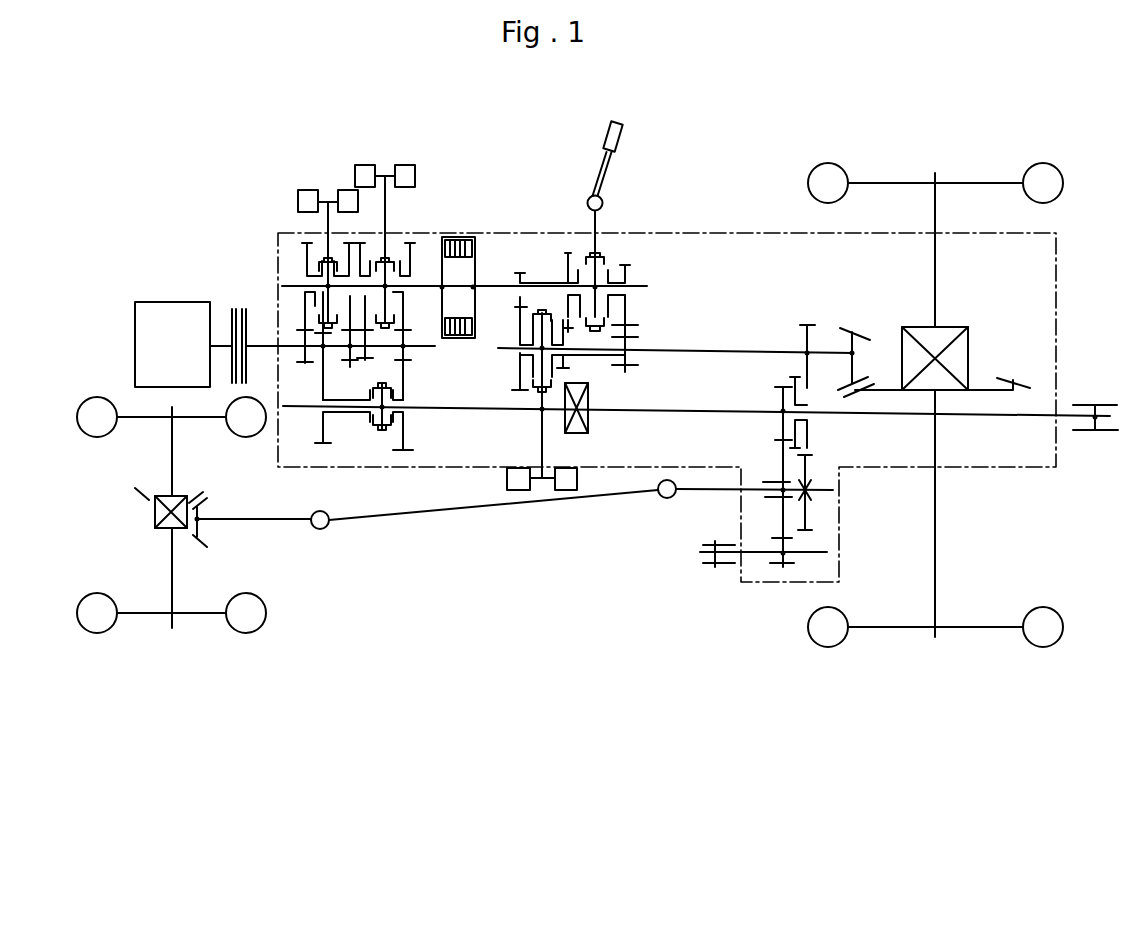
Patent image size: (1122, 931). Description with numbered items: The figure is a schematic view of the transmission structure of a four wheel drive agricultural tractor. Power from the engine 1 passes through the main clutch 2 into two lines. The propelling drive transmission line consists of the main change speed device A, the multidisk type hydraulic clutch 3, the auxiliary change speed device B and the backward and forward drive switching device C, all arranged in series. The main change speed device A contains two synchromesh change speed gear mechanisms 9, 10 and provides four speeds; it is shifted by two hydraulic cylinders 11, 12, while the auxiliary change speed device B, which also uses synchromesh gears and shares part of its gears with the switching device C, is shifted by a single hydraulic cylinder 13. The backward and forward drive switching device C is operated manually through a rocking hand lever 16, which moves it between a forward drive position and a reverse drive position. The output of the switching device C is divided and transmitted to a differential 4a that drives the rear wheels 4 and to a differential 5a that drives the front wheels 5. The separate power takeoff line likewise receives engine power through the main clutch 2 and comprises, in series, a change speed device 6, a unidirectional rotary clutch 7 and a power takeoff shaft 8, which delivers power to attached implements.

The engine 1 is at (150, 303).
The main clutch 2 is at (240, 290).
The multidisk type hydraulic clutch 3 is at (472, 240).
The rear wheels 4 is at (828, 163).
The differential 4a is at (963, 328).
The front wheels 5 is at (243, 440).
The differential 5a is at (150, 527).
The change speed device 6 is at (371, 438).
The unidirectional rotary clutch 7 is at (589, 430).
The power takeoff shaft 8 is at (1098, 405).
The synchromesh change speed gear mechanism 9 is at (387, 250).
The synchromesh change speed gear mechanism 10 is at (325, 255).
The hydraulic cylinder 11 is at (413, 168).
The hydraulic cylinder 12 is at (303, 197).
The hydraulic cylinder 13 is at (507, 478).
The rocking hand lever 16 is at (617, 140).
The main change speed device A is at (294, 260).
The auxiliary change speed device B is at (505, 379).
The backward and forward drive switching device C is at (622, 256).